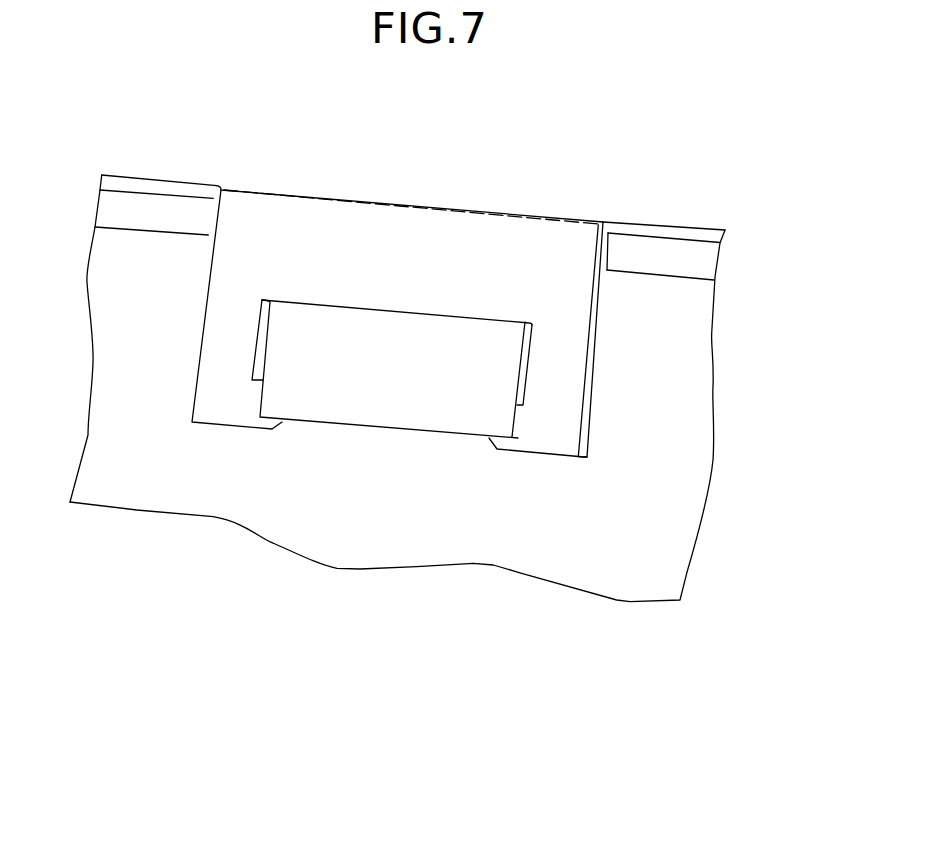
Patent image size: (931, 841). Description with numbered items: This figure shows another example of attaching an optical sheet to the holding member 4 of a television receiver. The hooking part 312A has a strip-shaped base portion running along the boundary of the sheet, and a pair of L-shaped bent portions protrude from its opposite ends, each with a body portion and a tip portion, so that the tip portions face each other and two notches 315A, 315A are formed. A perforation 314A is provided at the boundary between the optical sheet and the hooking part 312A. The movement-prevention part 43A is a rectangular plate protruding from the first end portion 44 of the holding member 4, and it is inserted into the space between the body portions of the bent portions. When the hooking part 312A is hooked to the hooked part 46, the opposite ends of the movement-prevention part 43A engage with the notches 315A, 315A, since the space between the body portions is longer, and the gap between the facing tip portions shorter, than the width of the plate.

The holding member 4 is at (700, 417).
The first end portion 44 is at (670, 245).
The hooked part 46 is at (643, 427).
The hooking part 312A is at (542, 243).
The perforation 314A is at (409, 207).
The movement-prevention part 43A is at (358, 397).
The notch 315A is at (257, 343).